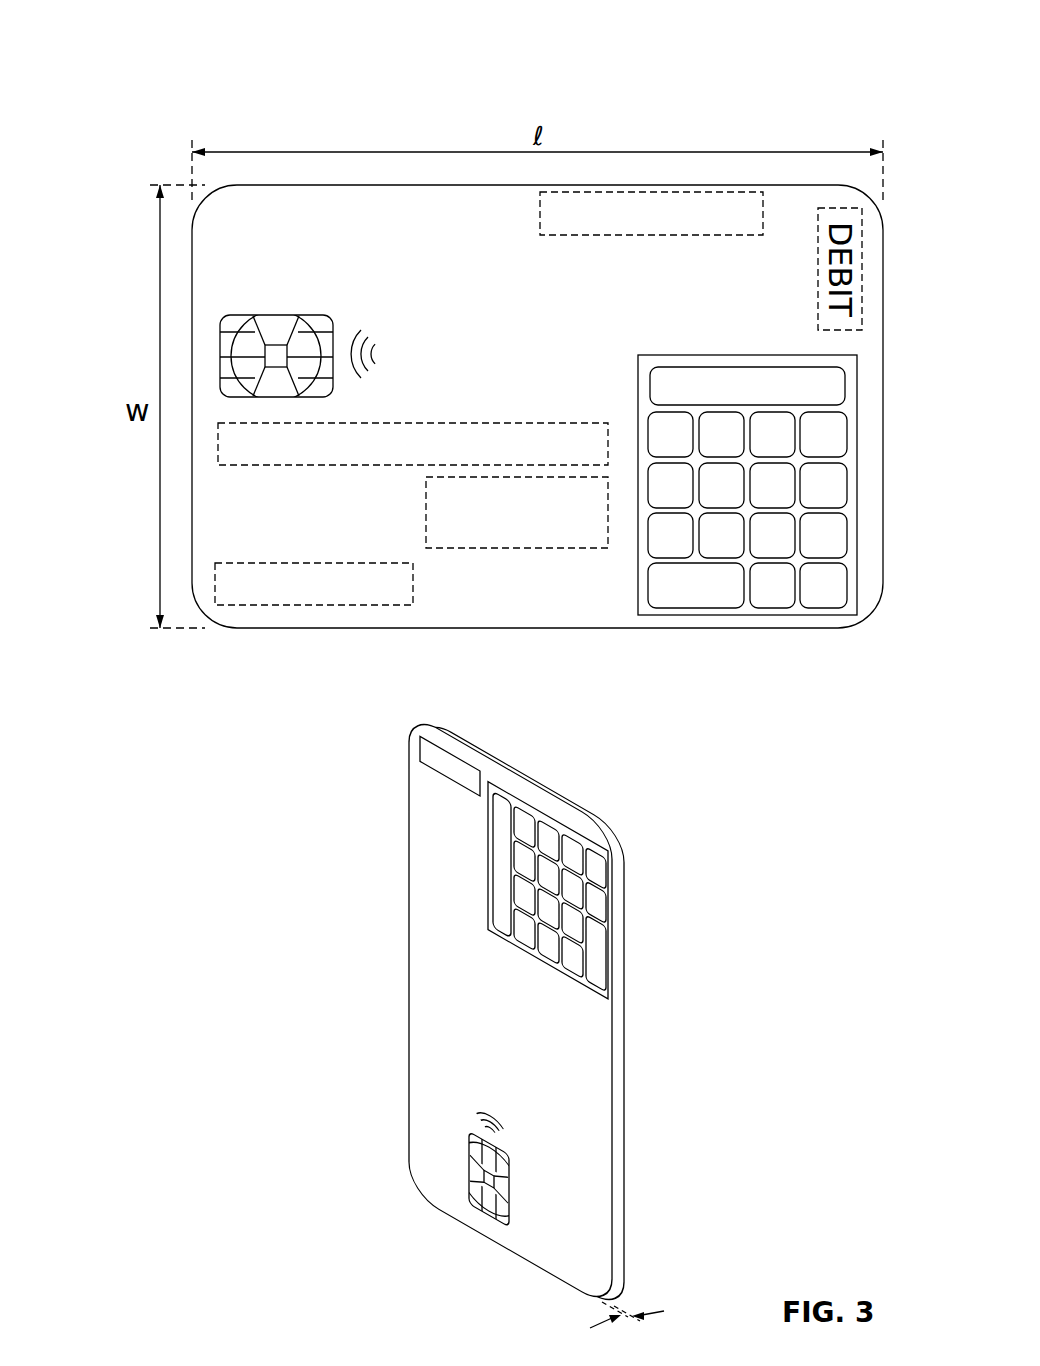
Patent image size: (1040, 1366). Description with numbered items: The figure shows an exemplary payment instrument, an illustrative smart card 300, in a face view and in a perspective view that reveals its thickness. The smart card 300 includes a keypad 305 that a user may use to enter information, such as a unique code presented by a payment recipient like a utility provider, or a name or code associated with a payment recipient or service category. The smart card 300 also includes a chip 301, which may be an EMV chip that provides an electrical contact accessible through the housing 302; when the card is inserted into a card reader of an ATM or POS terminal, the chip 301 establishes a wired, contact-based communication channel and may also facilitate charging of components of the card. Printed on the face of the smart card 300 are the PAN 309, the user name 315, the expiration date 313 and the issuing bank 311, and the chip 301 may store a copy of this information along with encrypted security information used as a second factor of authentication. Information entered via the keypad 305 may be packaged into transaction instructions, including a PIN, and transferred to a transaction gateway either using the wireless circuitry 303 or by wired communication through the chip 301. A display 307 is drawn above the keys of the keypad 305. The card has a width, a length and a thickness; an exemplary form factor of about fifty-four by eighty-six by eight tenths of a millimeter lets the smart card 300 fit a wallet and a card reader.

The smart card 300 is at (134, 34).
The chip 301 is at (317, 315).
The housing 302 is at (537, 630).
The wireless circuitry 303 is at (380, 353).
The keypad 305 is at (737, 617).
The calculator display 307 is at (845, 390).
The PAN 309 is at (507, 422).
The issuing bank 311 is at (538, 212).
The expiration date 313 is at (426, 515).
The user name 315 is at (310, 607).